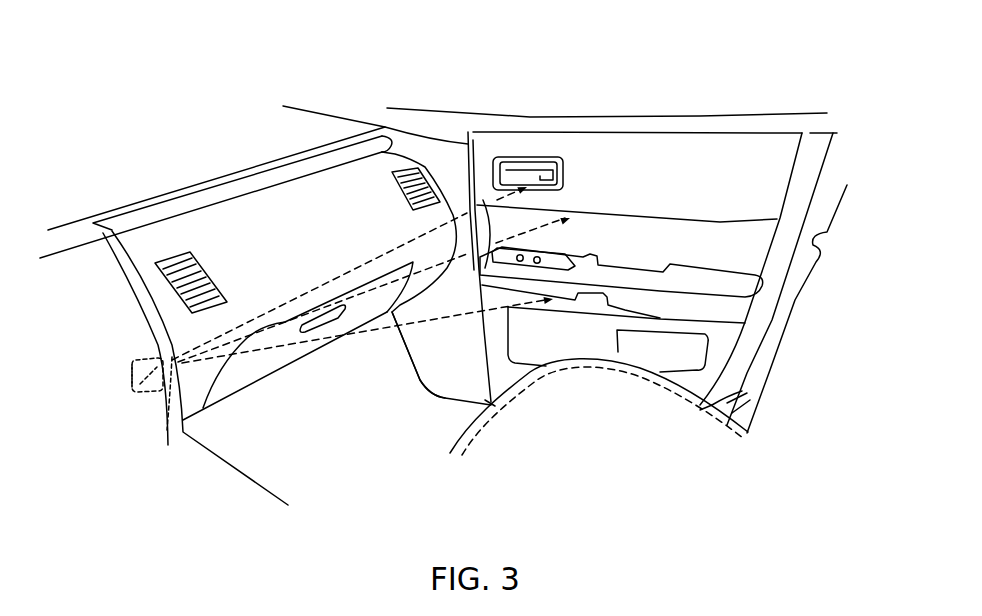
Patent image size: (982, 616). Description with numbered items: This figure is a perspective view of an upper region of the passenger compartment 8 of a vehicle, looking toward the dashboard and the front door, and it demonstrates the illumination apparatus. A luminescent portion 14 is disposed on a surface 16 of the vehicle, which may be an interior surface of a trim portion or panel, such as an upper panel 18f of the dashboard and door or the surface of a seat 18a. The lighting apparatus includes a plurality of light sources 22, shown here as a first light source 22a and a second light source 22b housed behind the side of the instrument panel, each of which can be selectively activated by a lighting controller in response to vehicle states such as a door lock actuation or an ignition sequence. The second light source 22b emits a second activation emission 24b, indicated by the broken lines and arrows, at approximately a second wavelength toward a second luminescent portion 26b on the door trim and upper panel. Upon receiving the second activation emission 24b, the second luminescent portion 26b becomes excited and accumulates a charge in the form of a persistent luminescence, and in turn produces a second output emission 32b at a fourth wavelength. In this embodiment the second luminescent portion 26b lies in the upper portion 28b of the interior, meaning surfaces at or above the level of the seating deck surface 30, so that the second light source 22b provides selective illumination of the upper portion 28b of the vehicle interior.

The passenger compartment 8 is at (530, 54).
The luminescent portion 14 is at (312, 203).
The surface 16 is at (600, 423).
The upper panel 18f is at (357, 200).
The seat 18a is at (620, 420).
The light sources 22 is at (130, 359).
The first light source 22a is at (168, 395).
The second light source 22b is at (132, 392).
The second activation emission 24b is at (296, 343).
The second luminescent portion 26b is at (645, 91).
The upper portion 28b is at (553, 412).
The seating deck surface 30 is at (503, 423).
The second output emission 32b is at (444, 407).